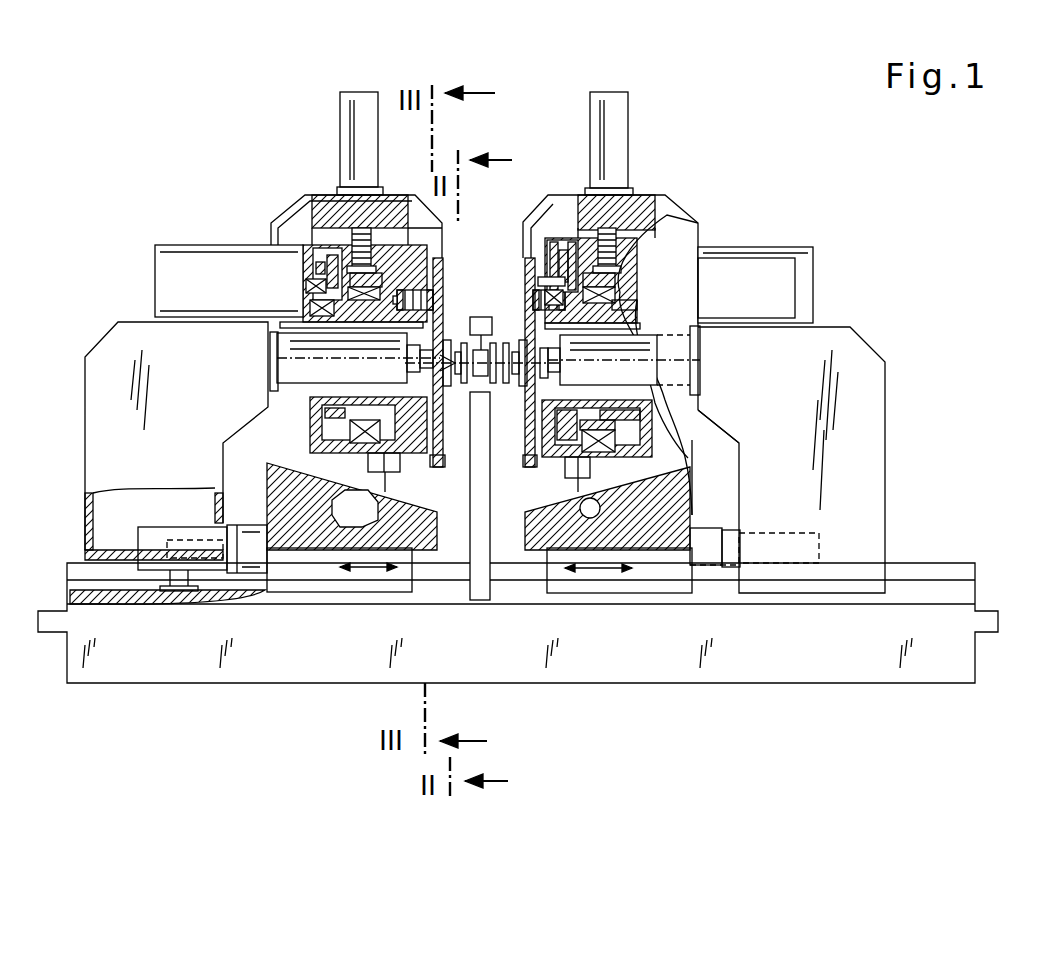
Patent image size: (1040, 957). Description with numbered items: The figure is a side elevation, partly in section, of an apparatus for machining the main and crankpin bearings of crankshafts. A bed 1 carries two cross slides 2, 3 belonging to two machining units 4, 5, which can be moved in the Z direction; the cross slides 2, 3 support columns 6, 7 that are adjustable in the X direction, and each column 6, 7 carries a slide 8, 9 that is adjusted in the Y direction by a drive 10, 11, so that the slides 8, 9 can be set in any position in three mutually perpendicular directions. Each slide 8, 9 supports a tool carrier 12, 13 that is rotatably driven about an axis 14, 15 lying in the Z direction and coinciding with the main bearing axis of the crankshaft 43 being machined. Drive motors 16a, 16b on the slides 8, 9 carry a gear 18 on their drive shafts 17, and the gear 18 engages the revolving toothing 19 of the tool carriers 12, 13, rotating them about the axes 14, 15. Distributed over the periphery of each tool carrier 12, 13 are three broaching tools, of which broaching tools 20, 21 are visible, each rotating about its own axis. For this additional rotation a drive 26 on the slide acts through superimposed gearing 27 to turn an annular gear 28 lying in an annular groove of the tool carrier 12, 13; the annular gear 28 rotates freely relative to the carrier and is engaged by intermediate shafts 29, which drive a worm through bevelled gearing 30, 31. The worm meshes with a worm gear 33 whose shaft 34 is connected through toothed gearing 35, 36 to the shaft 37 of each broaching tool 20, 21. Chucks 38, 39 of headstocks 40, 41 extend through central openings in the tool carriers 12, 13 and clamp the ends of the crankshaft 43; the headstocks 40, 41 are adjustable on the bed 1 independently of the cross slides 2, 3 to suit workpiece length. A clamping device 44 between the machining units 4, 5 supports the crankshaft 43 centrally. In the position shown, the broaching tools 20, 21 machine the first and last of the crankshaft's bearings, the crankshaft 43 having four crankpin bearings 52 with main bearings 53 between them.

The bed 1 is at (732, 672).
The cross slide 2 is at (318, 568).
The cross slide 3 is at (637, 573).
The machining unit 4 is at (148, 156).
The machining unit 5 is at (804, 156).
The column 6 is at (335, 212).
The column 7 is at (630, 212).
The slide 8 is at (372, 272).
The slide 9 is at (667, 214).
The drive 10 is at (352, 115).
The drive 11 is at (620, 127).
The tool carrier 12 is at (405, 284).
The tool carrier 13 is at (555, 242).
The axis 14 is at (312, 355).
The axis 15 is at (672, 363).
The drive motor 16a is at (180, 262).
The drive motor 16b is at (768, 256).
The drive shaft 17 is at (322, 258).
The gear 18 is at (310, 285).
The revolving toothing 19 is at (318, 312).
The broaching tool 20 is at (443, 264).
The broaching tool 21 is at (440, 454).
The drive 26 is at (780, 306).
The superimposed gearing 27 is at (660, 282).
The annular gear 28 is at (632, 411).
The intermediate shaft 29 is at (637, 308).
The bevelled gearing 30 is at (627, 438).
The bevelled gearing 31 is at (552, 448).
The worm gear 33 is at (562, 254).
The shaft 34 is at (550, 268).
The toothed gearing 35 is at (545, 283).
The toothed gearing 36 is at (637, 350).
The shaft 37 is at (400, 323).
The chuck 38 is at (275, 340).
The chuck 39 is at (676, 352).
The headstock 40 is at (100, 397).
The headstock 41 is at (860, 455).
The crankshaft 43 is at (457, 376).
The clamping device 44 is at (476, 590).
The crankpin bearing 52 is at (447, 360).
The main bearing 53 is at (488, 358).